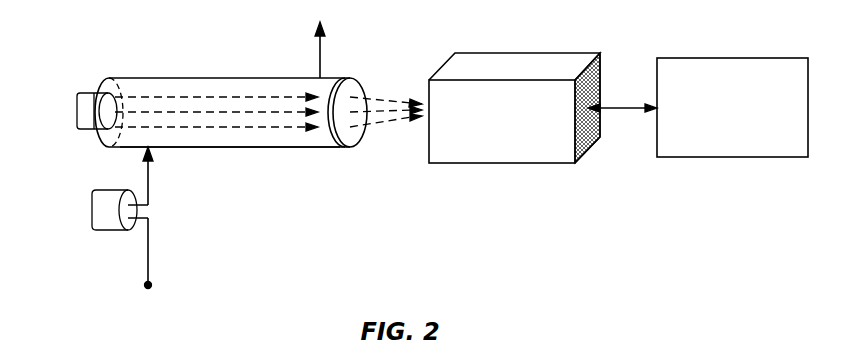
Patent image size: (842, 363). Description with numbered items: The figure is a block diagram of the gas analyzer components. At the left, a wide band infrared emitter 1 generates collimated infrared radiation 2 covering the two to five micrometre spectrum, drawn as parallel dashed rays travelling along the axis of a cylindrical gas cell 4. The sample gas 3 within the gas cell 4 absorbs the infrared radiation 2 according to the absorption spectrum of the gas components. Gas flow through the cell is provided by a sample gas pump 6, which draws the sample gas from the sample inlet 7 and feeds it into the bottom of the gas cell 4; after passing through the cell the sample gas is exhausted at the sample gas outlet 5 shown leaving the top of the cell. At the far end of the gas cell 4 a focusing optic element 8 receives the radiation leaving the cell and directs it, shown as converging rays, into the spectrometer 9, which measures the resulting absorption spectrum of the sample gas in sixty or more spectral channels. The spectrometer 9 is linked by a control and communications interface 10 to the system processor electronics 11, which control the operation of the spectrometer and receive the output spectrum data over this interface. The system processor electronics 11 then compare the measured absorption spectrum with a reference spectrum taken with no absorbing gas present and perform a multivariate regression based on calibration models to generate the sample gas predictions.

The wide band infrared emitter 1 is at (76, 110).
The collimated infrared radiation 2 is at (248, 127).
The sample gas 3 is at (236, 80).
The gas cell 4 is at (182, 77).
The sample gas outlet 5 is at (318, 52).
The sample gas pump 6 is at (90, 212).
The sample inlet 7 is at (150, 251).
The focusing optic element 8 is at (337, 142).
The spectrometer 9 is at (500, 132).
The control and communications interface 10 is at (628, 110).
The system processor electronics 11 is at (720, 119).